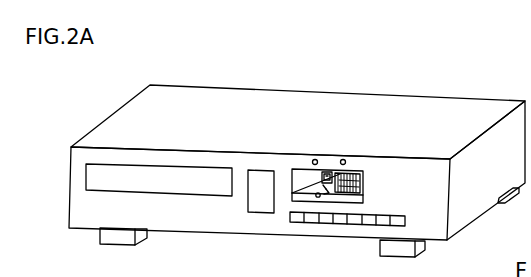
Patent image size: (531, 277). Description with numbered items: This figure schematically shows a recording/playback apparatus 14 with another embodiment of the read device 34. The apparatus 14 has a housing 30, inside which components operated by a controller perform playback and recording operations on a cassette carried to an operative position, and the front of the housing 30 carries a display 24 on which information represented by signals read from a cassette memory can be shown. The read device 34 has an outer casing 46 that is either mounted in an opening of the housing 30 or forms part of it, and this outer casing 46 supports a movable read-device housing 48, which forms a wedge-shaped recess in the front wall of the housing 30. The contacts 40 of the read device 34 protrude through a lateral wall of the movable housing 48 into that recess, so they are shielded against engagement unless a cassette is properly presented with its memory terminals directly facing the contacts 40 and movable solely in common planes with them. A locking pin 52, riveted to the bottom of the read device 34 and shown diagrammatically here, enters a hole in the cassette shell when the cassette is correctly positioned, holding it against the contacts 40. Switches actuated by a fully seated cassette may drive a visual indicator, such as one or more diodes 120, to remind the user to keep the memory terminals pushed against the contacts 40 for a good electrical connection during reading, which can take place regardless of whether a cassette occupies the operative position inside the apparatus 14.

The playback/recording apparatus 14 is at (348, 92).
The housing 30 is at (223, 106).
The display 24 is at (260, 213).
The outer casing 46 is at (308, 168).
The movable read-device housing 48 is at (363, 169).
The contacts 40 is at (356, 190).
The locking pin 52 is at (318, 198).
The diodes 120 is at (343, 159).
The read device 34 is at (336, 212).